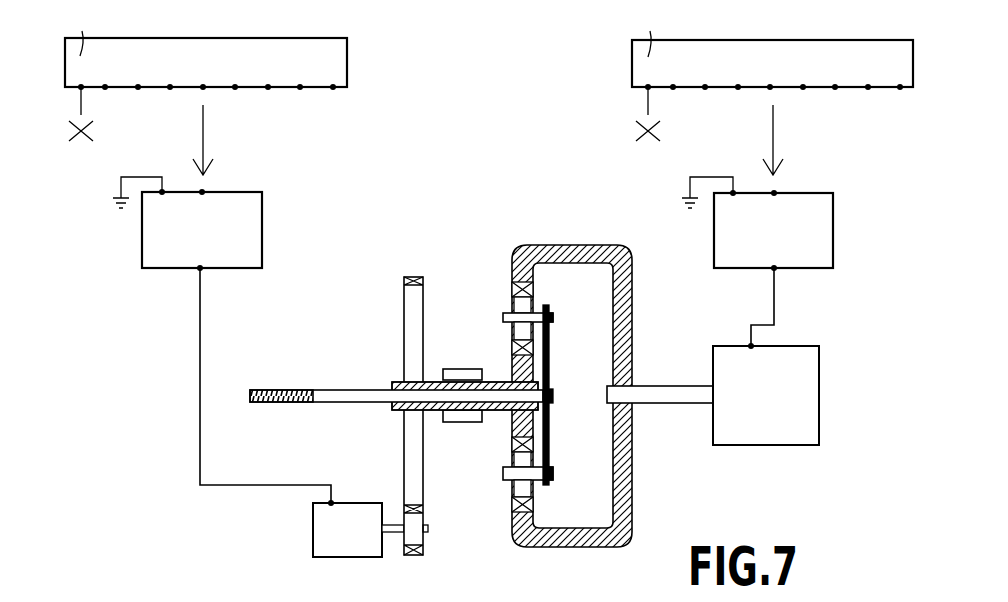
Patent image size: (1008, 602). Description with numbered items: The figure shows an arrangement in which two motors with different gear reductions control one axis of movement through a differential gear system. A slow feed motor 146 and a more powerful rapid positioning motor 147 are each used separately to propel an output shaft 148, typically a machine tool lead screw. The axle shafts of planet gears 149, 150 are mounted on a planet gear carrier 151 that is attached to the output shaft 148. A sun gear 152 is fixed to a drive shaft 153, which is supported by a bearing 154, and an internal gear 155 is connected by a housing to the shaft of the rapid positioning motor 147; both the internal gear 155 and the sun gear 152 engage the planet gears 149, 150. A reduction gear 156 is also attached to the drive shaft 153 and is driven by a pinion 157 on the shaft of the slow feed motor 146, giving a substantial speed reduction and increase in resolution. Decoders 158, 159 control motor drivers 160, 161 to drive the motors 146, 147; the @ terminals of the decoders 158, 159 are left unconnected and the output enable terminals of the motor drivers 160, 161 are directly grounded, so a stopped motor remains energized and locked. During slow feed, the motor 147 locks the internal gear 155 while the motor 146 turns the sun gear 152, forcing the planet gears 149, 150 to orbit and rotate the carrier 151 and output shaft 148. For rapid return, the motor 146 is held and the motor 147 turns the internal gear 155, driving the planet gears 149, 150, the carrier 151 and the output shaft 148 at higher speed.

The slow feed motor 146 is at (343, 558).
The rapid positioning motor 147 is at (748, 450).
The output shaft 148 is at (352, 388).
The planet gear 149 is at (504, 306).
The planet gear 150 is at (505, 462).
The planet gear carrier 151 is at (553, 342).
The sun gear 152 is at (512, 355).
The drive shaft 153 is at (392, 410).
The bearing 154 is at (463, 425).
The internal gear 155 is at (512, 284).
The reduction gear 156 is at (424, 490).
The pinion 157 is at (424, 545).
The decoder 158 is at (350, 62).
The decoder 159 is at (628, 60).
The motor driver 160 is at (266, 222).
The motor driver 161 is at (838, 236).